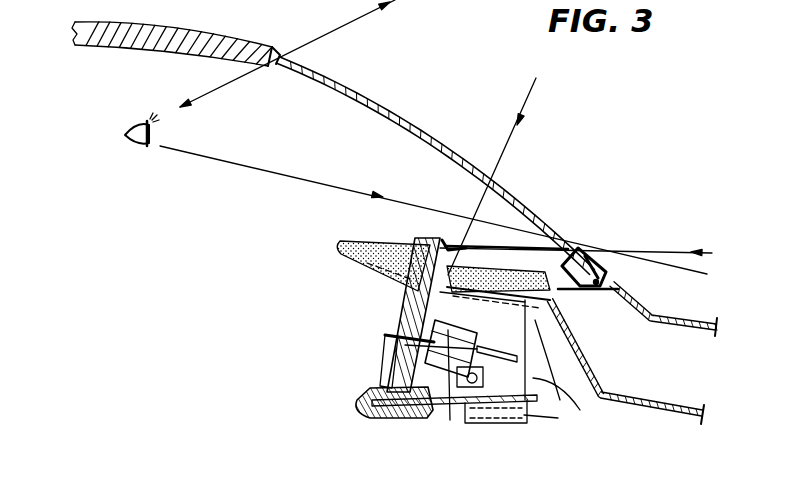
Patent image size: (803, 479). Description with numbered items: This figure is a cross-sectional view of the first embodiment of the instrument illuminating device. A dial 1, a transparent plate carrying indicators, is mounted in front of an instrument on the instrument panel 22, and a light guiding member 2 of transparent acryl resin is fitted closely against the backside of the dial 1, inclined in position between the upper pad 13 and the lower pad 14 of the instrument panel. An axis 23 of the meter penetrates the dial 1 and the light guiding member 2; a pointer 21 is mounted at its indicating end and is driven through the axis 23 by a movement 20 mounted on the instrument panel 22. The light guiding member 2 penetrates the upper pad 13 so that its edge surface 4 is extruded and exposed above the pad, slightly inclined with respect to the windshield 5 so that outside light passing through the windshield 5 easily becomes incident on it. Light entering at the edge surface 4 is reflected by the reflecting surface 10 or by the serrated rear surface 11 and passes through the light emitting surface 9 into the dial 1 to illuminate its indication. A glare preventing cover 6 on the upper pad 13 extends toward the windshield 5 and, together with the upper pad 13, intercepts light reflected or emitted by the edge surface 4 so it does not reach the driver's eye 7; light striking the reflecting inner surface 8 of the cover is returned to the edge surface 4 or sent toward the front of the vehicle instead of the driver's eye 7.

The dial 1 is at (337, 241).
The light guiding member 2 is at (409, 418).
The edge surface 4 is at (460, 258).
The windshield 5 is at (345, 87).
The glare preventing cover 6 is at (440, 238).
The driver's eye 7 is at (145, 146).
The inner surface 8 is at (478, 250).
The light emitting surface 9 is at (390, 350).
The reflecting surface 10 is at (392, 245).
The rear surface 11 is at (522, 308).
The upper pad 13 is at (356, 268).
The lower pad 14 is at (358, 415).
The movement 20 is at (447, 410).
The pointer 21 is at (388, 358).
The instrument panel 22 is at (620, 363).
The axis 23 is at (410, 320).